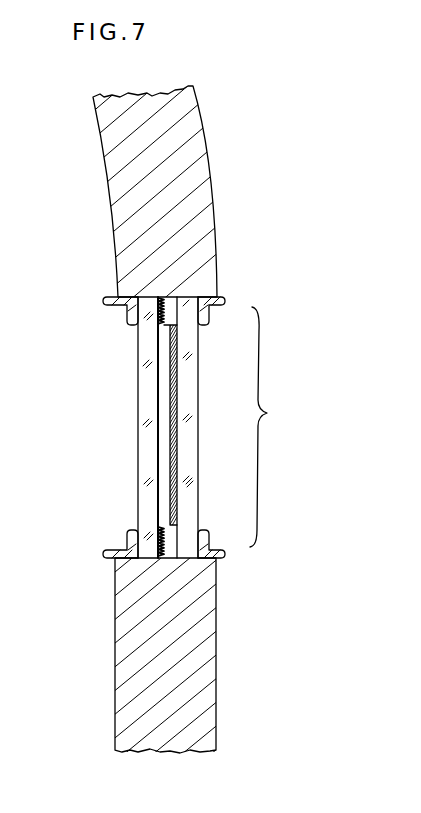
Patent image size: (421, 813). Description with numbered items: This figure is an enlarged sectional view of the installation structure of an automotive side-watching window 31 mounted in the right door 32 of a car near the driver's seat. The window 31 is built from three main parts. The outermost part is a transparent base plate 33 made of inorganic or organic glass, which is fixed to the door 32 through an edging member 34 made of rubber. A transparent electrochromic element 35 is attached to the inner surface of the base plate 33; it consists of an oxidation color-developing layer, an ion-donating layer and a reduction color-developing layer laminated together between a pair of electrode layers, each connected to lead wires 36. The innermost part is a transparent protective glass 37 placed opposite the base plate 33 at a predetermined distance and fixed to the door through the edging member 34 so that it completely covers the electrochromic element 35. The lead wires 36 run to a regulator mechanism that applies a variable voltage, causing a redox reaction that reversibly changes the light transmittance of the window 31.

The side-watching window 31 is at (195, 427).
The door 32 is at (216, 217).
The transparent base plate 33 is at (196, 410).
The edging member 34 is at (105, 297).
The transparent electrochromic element 35 is at (170, 448).
The lead wires 36 is at (165, 342).
The transparent protective glass 37 is at (137, 408).